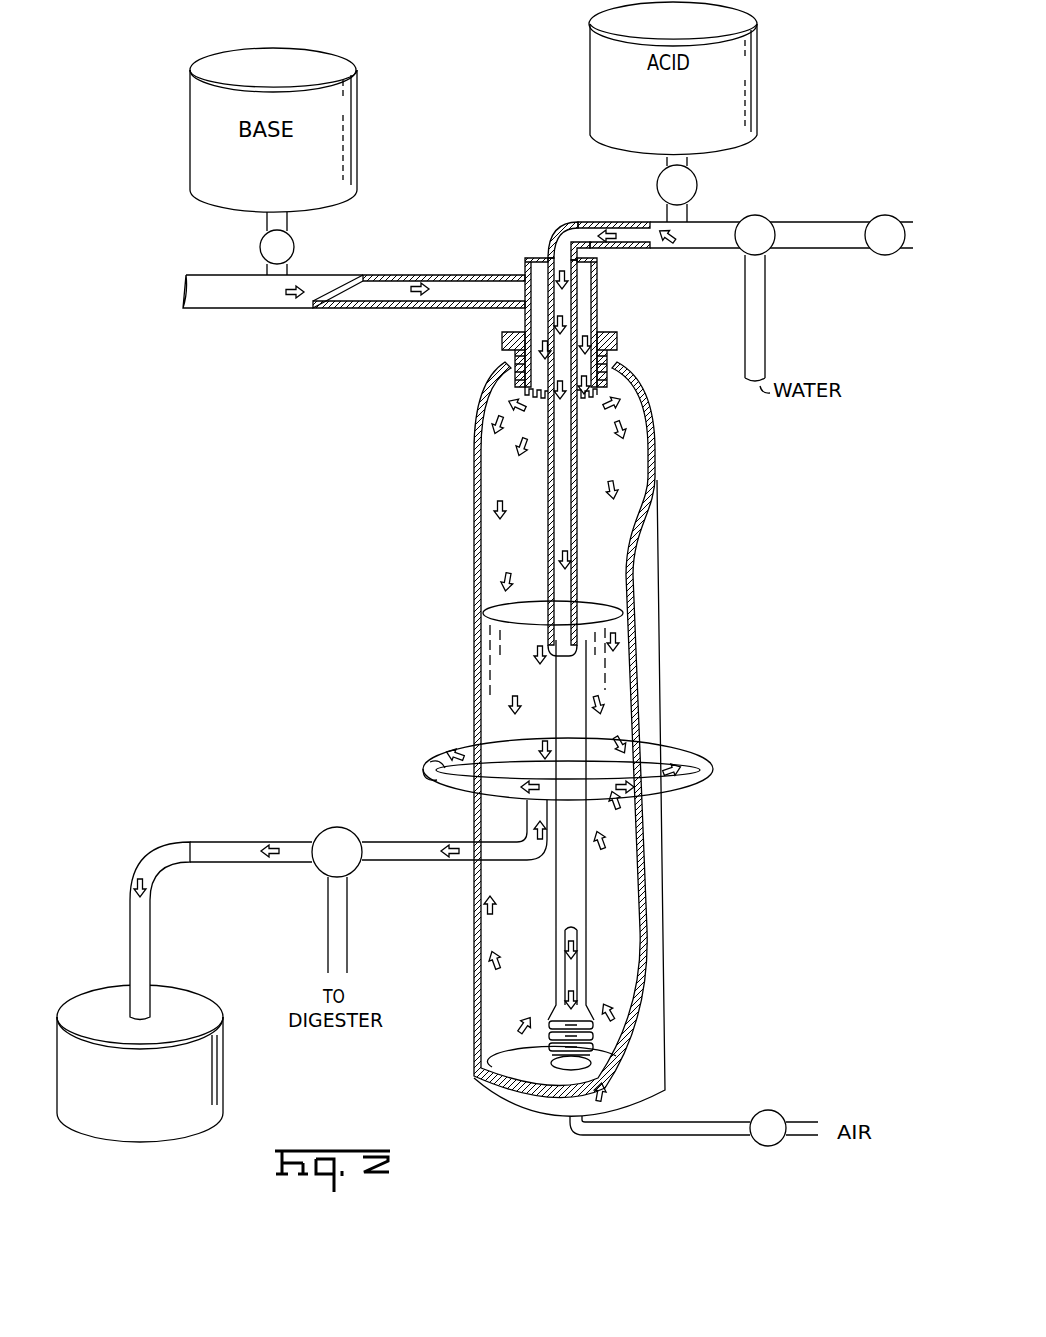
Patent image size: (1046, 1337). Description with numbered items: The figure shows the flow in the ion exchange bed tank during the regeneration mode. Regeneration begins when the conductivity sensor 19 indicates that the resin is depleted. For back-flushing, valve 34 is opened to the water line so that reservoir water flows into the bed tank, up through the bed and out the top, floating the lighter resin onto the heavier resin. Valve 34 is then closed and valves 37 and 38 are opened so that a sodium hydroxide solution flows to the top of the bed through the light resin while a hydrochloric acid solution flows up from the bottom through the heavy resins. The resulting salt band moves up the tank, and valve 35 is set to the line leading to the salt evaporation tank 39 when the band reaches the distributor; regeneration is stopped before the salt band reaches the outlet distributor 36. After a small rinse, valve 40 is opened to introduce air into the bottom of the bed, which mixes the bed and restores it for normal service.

The conductivity sensor 19 is at (878, 216).
The valve 34 is at (770, 205).
The valve 35 is at (345, 828).
The outlet distributor 36 is at (430, 760).
The valve 37 is at (698, 184).
The valve 38 is at (294, 248).
The salt evaporation tank 39 is at (222, 1080).
The valve 40 is at (778, 1111).